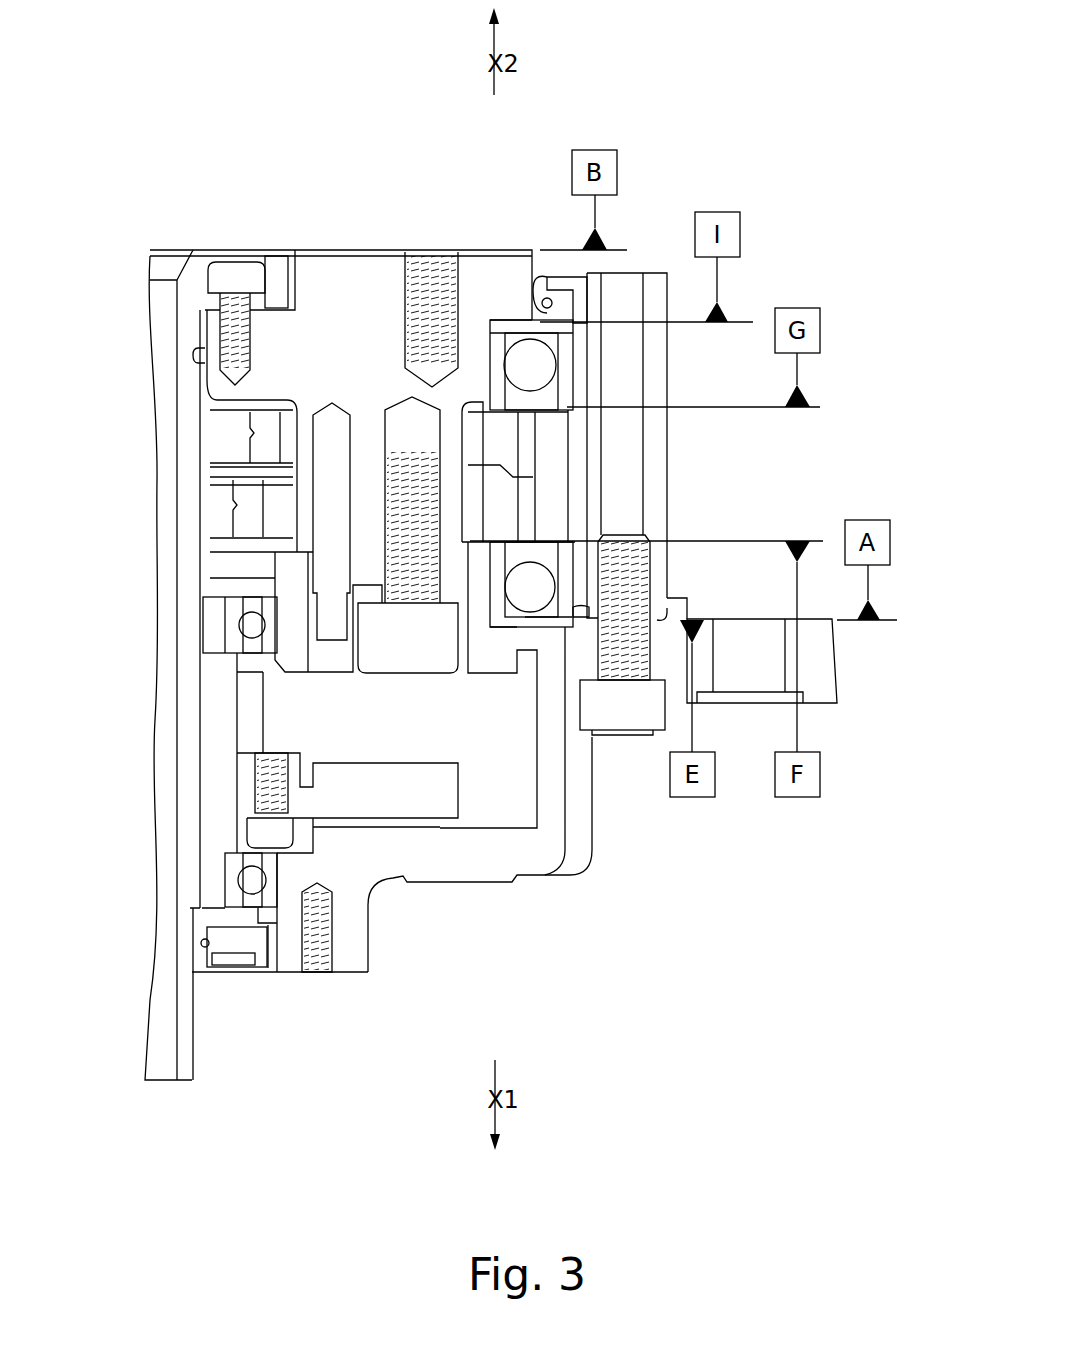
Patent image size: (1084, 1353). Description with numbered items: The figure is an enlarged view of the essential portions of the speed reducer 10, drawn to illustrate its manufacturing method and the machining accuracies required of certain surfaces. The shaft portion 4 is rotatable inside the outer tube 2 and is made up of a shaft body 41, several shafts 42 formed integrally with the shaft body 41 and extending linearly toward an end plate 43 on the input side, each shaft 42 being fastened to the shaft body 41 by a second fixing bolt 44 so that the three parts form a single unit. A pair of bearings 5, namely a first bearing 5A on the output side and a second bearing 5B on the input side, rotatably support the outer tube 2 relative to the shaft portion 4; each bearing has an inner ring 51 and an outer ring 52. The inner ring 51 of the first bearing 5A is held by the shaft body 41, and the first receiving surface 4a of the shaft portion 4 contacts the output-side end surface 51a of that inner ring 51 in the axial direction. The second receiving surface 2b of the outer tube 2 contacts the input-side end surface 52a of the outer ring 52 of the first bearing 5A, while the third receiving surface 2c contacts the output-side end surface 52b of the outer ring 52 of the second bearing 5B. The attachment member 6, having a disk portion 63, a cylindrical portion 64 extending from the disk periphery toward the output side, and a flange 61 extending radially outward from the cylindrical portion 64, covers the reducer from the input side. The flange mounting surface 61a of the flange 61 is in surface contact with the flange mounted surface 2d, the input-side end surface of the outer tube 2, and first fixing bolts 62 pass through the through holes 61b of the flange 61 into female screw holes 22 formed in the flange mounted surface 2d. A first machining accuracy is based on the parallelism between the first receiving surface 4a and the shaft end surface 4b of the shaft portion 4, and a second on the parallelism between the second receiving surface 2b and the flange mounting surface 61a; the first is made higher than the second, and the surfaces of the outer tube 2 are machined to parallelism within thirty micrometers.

The speed reducer 10 is at (712, 104).
The shaft portion 4 is at (303, 232).
The shaft body 41 is at (338, 248).
The first receiving surface 4a is at (488, 338).
The shaft end surface 4b is at (372, 232).
The shafts 42 is at (440, 449).
The end plate 43 is at (353, 677).
The second fixing bolt 44 is at (470, 505).
The inner ring 51 is at (437, 300).
The output-side end surface of the inner ring 51a is at (518, 313).
The pair of bearings 5 is at (501, 551).
The first bearing 5A is at (583, 280).
The second bearing 5B is at (472, 610).
The outer ring 52 is at (577, 393).
The input-side end surface of the outer ring 52a is at (550, 412).
The output-side end surface of the outer ring 52b is at (550, 542).
The outer tube 2 is at (668, 302).
The second receiving surface 2b is at (575, 405).
The third receiving surface 2c is at (573, 558).
The flange mounted surface 2d is at (667, 628).
The female screw holes 22 is at (640, 573).
The flange 61 is at (837, 657).
The flange mounting surface 61a is at (710, 619).
The through holes 61b is at (640, 735).
The first fixing bolts 62 is at (627, 737).
The disk portion 63 is at (440, 885).
The cylindrical portion 64 is at (593, 790).
The attachment member 6 is at (490, 898).